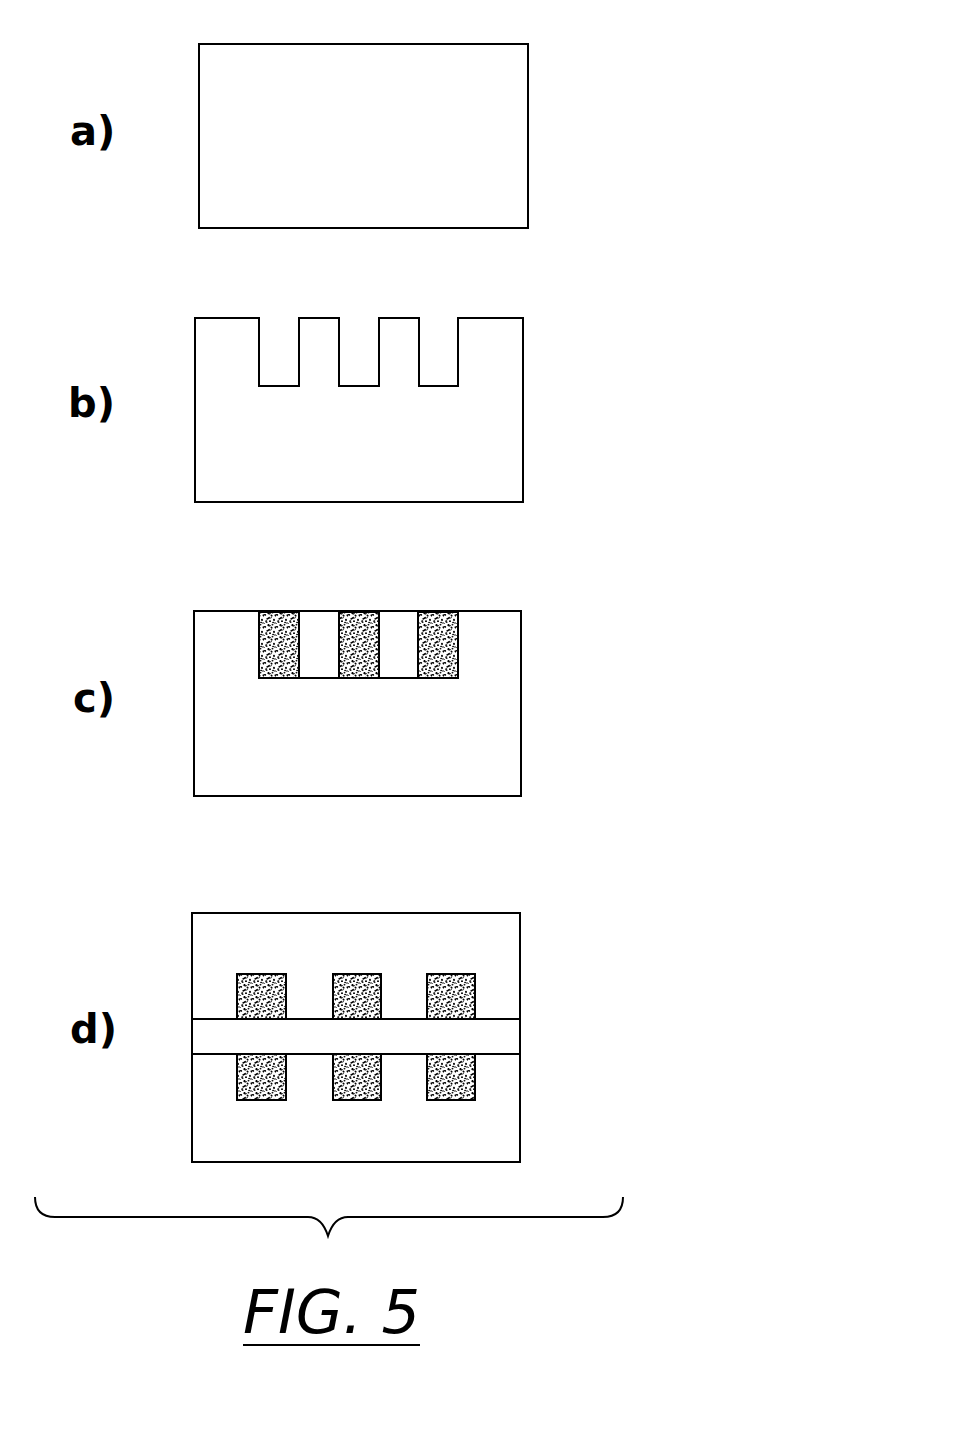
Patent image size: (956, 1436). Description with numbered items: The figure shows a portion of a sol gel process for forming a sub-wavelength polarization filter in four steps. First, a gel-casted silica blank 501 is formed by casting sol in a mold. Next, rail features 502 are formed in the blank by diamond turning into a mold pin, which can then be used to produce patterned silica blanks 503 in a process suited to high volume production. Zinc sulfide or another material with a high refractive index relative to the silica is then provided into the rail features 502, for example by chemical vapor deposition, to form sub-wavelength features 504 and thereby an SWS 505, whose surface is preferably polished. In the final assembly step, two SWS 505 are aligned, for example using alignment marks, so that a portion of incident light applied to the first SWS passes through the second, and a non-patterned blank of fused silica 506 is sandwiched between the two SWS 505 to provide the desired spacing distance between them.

The silica blank 501 is at (508, 86).
The rail features 502 is at (437, 337).
The patterned silica blank 503 is at (523, 420).
The sub-wavelength features 504 is at (433, 620).
The SWS 505 is at (521, 720).
The non-patterned blank of fused silica 506 is at (512, 1036).